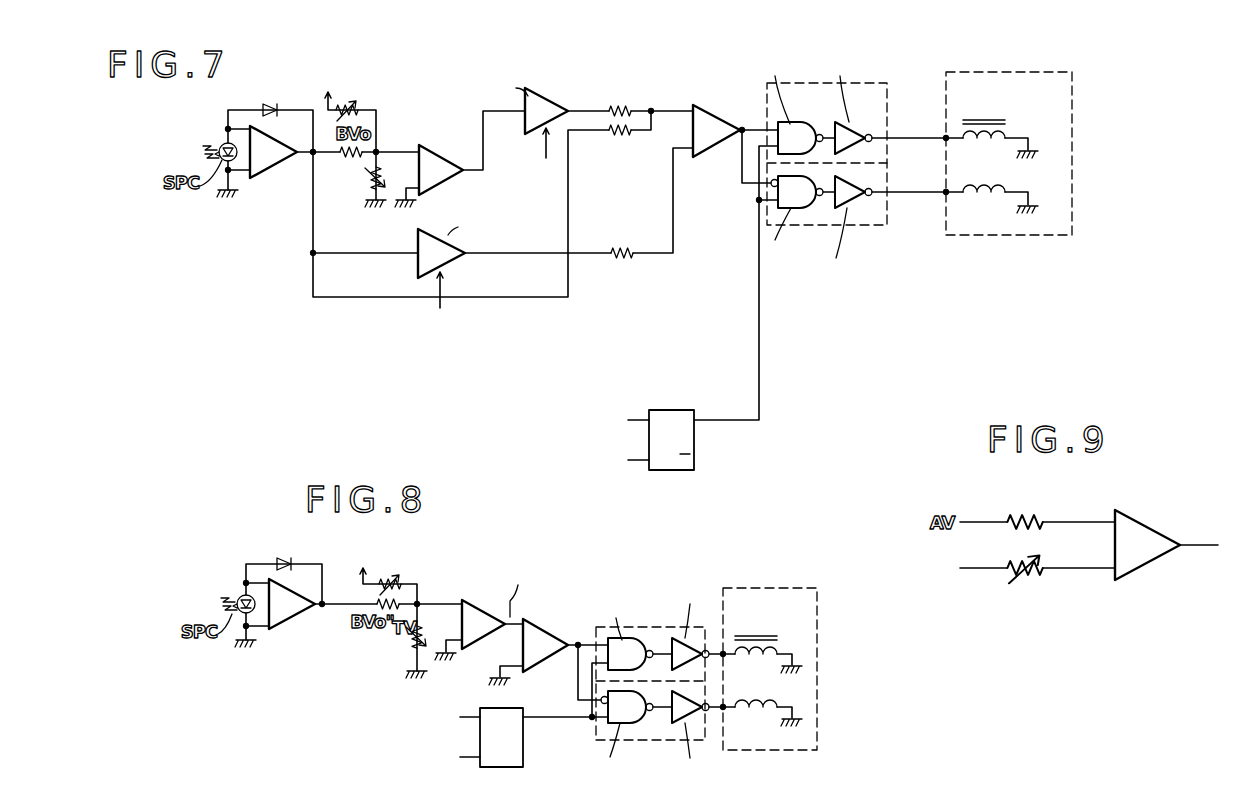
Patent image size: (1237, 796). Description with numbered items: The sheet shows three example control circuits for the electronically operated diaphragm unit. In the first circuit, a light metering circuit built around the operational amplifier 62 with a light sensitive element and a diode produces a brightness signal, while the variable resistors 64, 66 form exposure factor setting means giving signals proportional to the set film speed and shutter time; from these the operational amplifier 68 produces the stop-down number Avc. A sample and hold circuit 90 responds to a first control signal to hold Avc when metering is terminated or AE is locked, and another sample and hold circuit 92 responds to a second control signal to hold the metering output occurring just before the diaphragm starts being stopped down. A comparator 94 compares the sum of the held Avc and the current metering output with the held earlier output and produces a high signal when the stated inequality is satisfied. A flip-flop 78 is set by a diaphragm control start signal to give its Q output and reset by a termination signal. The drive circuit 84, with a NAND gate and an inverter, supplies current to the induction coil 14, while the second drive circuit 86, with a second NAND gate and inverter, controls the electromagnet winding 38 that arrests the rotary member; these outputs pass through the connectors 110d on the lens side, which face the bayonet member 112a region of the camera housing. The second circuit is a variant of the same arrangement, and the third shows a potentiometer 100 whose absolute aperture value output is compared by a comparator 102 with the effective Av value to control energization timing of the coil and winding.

In FIG. 7, the operational amplifier 62 is at (270, 158).
In FIG. 8, the operational amplifier 62 is at (287, 612).
In FIG. 7, the variable resistor 64 is at (346, 100).
In FIG. 8, the variable resistor 64 is at (395, 587).
In FIG. 7, the variable resistor 66 is at (366, 184).
In FIG. 8, the variable resistor 66 is at (412, 639).
In FIG. 7, the operational amplifier 68 is at (442, 155).
In FIG. 8, the operational amplifier 68 is at (483, 612).
In FIG. 7, the sample and hold circuit 90 is at (503, 181).
In FIG. 8, the sample and hold circuit 90 is at (553, 634).
In FIG. 7, the sample and hold circuit 92 is at (502, 244).
In FIG. 7, the comparator 94 is at (721, 111).
In FIG. 7, the flip-flop 78 is at (672, 410).
In FIG. 8, the flip-flop 78 is at (523, 757).
In FIG. 7, the second drive circuit 86 is at (860, 91).
In FIG. 8, the second drive circuit 86 is at (655, 627).
In FIG. 7, the drive circuit 84 is at (861, 225).
In FIG. 8, the drive circuit 84 is at (655, 740).
In FIG. 7, the connectors 110d is at (944, 140).
In FIG. 7, the bayonet member 112a is at (945, 190).
In FIG. 7, the electromagnet coil 38 is at (990, 120).
In FIG. 8, the electromagnet coil 38 is at (758, 636).
In FIG. 7, the induction coil 14 is at (988, 186).
In FIG. 8, the induction coil 14 is at (752, 705).
In FIG. 9, the potentiometer 100 is at (1033, 578).
In FIG. 9, the comparator 102 is at (1089, 545).